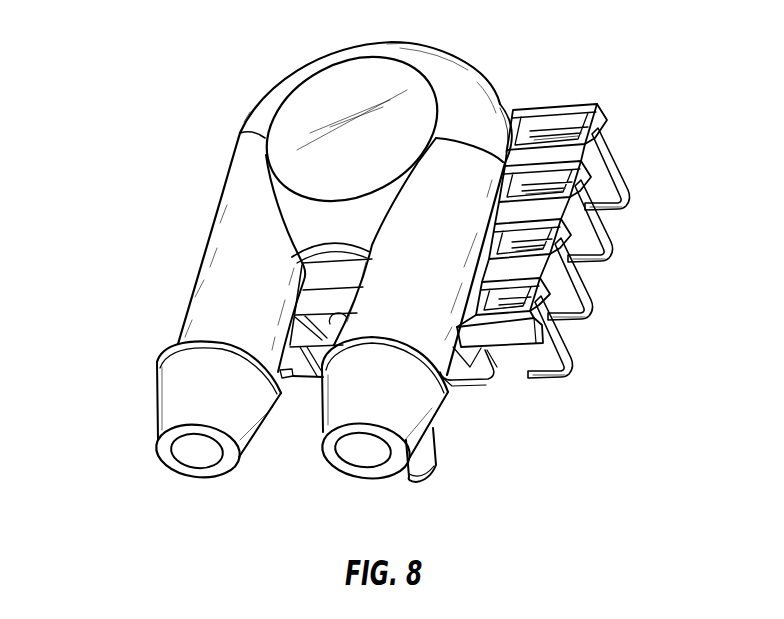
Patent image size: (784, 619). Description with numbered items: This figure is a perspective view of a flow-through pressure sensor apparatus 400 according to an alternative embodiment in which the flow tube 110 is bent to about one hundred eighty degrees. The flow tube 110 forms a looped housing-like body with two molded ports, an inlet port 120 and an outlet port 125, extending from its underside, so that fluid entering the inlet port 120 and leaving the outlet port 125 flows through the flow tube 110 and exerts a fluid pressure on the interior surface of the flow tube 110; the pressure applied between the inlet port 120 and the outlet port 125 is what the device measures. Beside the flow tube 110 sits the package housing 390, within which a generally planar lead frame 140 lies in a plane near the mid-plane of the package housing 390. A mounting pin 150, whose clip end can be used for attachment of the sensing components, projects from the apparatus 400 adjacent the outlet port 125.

The flow-through pressure sensor apparatus 400 is at (141, 41).
The flow tube 110 is at (392, 42).
The inlet port 120 is at (193, 478).
The outlet port 125 is at (356, 478).
The lead frame 140 is at (618, 174).
The mounting pin 150 is at (437, 440).
The package housing 390 is at (571, 81).